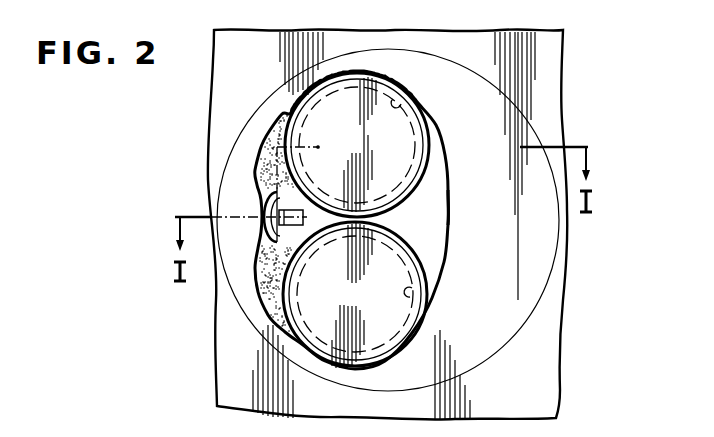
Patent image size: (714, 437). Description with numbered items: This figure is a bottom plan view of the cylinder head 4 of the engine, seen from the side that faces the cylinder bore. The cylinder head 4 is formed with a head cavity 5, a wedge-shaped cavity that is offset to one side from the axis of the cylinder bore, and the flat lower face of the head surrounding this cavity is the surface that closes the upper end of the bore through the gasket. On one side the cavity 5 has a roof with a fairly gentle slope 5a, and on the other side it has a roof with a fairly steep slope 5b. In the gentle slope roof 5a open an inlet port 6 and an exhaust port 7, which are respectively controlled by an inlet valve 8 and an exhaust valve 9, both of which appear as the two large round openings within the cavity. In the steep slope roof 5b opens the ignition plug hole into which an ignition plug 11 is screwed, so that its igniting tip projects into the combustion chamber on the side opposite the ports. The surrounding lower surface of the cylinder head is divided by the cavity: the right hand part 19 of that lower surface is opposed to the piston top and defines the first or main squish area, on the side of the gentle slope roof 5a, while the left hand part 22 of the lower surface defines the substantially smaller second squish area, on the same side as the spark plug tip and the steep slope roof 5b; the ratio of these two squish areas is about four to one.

The cylinder head 4 is at (543, 67).
The head cavity 5 is at (437, 174).
The gentle slope roof 5a is at (423, 218).
The steep slope roof 5b is at (282, 259).
The inlet port 6 is at (400, 106).
The exhaust port 7 is at (414, 292).
The inlet valve 8 is at (362, 152).
The exhaust valve 9 is at (364, 303).
The ignition plug 11 is at (304, 221).
The lower surface of the cylinder head (right hand part) 19 is at (513, 260).
The lower surface of the cylinder head (left hand part) 22 is at (248, 228).